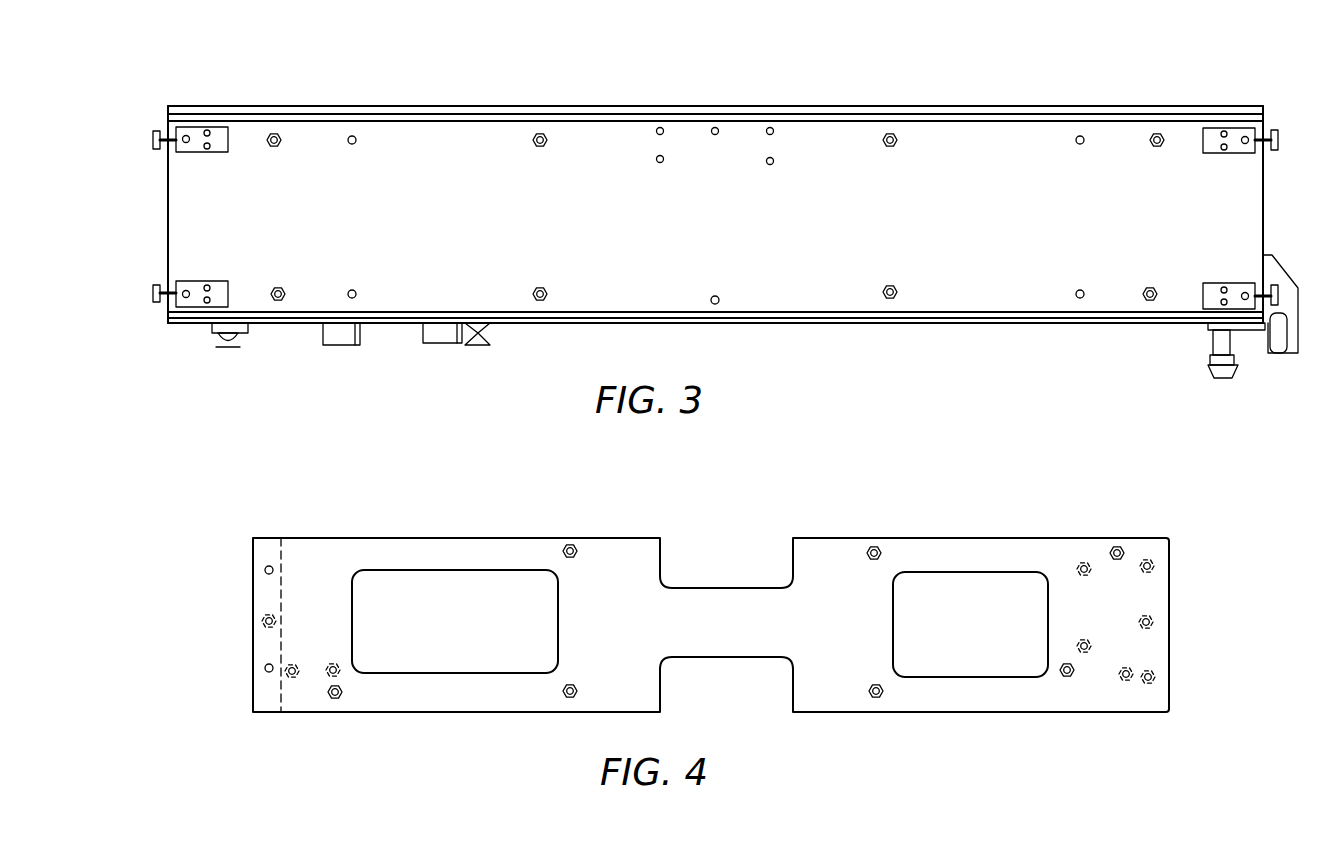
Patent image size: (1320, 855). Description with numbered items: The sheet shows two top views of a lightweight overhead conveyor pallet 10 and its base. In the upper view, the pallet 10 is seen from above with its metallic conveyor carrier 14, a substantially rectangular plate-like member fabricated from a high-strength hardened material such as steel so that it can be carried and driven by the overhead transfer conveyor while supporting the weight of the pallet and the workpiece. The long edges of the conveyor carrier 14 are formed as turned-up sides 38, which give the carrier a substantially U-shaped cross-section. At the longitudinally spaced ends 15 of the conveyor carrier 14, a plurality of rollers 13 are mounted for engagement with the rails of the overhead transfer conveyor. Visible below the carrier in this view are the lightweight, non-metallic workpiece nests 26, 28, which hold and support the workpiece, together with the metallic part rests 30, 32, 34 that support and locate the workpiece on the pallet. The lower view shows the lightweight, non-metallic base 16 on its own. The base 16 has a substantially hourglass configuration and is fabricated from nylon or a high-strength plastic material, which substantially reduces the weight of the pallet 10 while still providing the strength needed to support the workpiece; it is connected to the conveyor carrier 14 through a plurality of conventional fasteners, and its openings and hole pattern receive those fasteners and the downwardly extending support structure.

In FIG. 3, the lightweight overhead conveyor pallet 10 is at (266, 90).
In FIG. 3, the rollers 13 is at (160, 134).
In FIG. 3, the conveyor carrier 14 is at (800, 300).
In FIG. 3, the longitudinally spaced ends 15 is at (168, 222).
In FIG. 4, the base 16 is at (318, 531).
In FIG. 3, the workpiece nest 26 is at (345, 345).
In FIG. 3, the workpiece nest 28 is at (1280, 355).
In FIG. 3, the part rest 30 is at (223, 345).
In FIG. 3, the part rest 32 is at (478, 340).
In FIG. 3, the part rest 34 is at (1215, 372).
In FIG. 3, the turned-up sides 38 is at (975, 106).